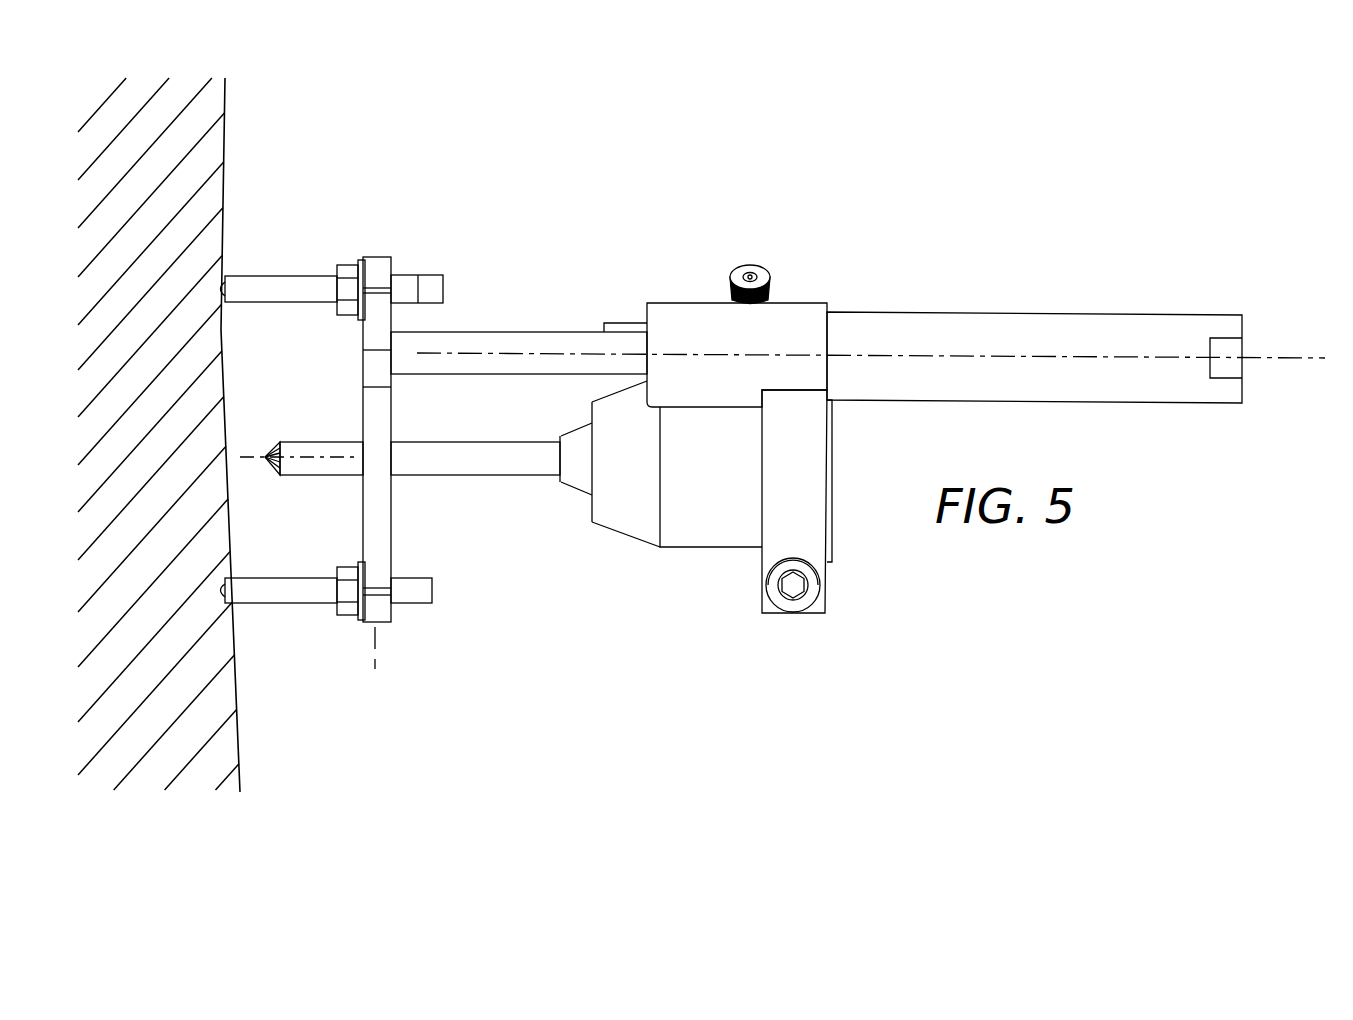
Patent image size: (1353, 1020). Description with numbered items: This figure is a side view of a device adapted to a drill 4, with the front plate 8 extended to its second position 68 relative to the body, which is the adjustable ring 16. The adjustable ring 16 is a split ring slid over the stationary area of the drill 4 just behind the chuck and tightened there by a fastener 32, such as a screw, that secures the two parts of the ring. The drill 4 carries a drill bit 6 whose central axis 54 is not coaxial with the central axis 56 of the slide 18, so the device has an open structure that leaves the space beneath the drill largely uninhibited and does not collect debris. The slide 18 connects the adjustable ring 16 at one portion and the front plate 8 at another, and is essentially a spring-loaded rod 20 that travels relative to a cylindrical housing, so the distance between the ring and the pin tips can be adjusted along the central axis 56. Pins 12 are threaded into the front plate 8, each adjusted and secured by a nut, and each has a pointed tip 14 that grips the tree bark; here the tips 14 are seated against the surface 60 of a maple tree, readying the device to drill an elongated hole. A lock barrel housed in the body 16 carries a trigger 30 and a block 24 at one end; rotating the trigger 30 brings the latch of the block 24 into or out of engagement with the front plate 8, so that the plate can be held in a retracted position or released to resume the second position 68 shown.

The drill 4 is at (710, 525).
The drill bit 6 is at (458, 442).
The front plate 8 is at (374, 257).
The pins 12 is at (292, 275).
The tip 14 is at (226, 303).
The adjustable ring 16 is at (808, 303).
The slide 18 is at (973, 318).
The rod 20 is at (534, 372).
The block 24 is at (620, 323).
The trigger 30 is at (752, 265).
The fastener 32 is at (810, 597).
The central axis 54 is at (290, 455).
The central axis 56 is at (1295, 357).
The surface 60 is at (225, 376).
The second position 68 is at (378, 650).